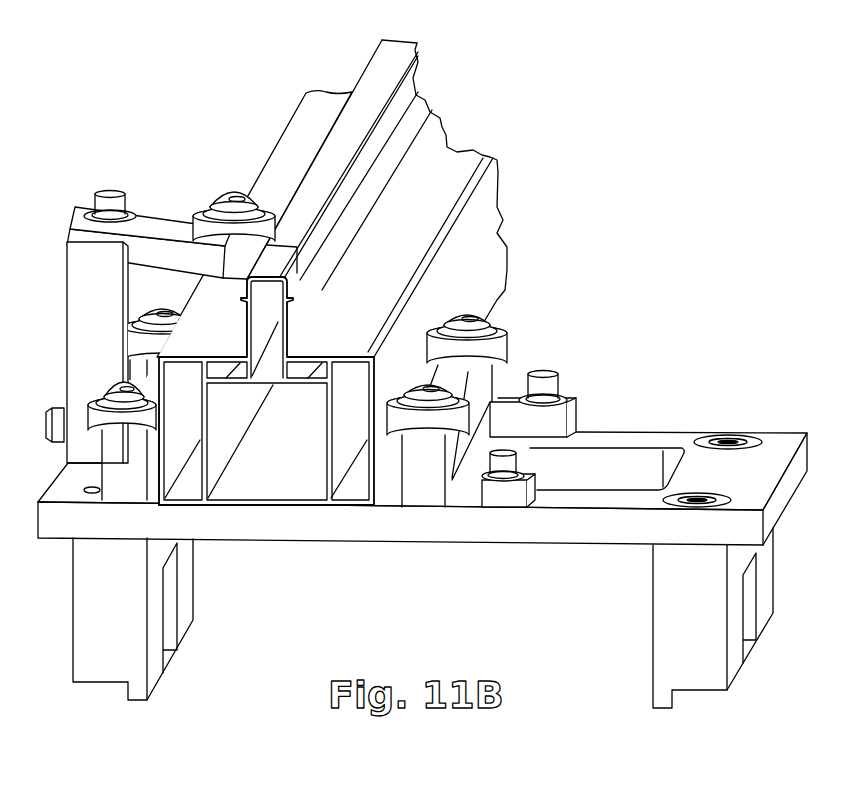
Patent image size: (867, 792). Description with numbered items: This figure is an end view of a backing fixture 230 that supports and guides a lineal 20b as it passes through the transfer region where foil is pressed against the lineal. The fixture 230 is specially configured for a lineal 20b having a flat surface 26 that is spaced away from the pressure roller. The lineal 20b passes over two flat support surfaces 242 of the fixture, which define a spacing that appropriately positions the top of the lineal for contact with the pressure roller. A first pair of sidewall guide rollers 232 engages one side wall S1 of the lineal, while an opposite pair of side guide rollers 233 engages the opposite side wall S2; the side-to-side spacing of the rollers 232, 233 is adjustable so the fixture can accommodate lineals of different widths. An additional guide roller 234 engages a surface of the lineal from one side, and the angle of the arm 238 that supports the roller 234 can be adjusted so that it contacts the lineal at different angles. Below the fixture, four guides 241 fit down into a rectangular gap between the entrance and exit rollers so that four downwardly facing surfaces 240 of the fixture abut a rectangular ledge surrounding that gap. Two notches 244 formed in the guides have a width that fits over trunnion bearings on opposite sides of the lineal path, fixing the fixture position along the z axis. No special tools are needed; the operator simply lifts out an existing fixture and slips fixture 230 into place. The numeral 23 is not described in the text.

The lineal 20b is at (407, 113).
The slab / guide bar 23 is at (355, 174).
The side wall S1 is at (480, 233).
The opposite side wall S2 is at (160, 442).
The backing fixture 230 is at (541, 268).
The sidewall guide rollers 232 is at (432, 427).
The side guide rollers 233 is at (133, 343).
The guide roller 234 is at (192, 228).
The arm 238 is at (87, 230).
The flat surface 26 is at (285, 506).
The flat support surfaces 242 is at (375, 505).
The downwardly facing surfaces 240 is at (107, 683).
The guides 241 is at (152, 697).
The notches 244 is at (170, 603).